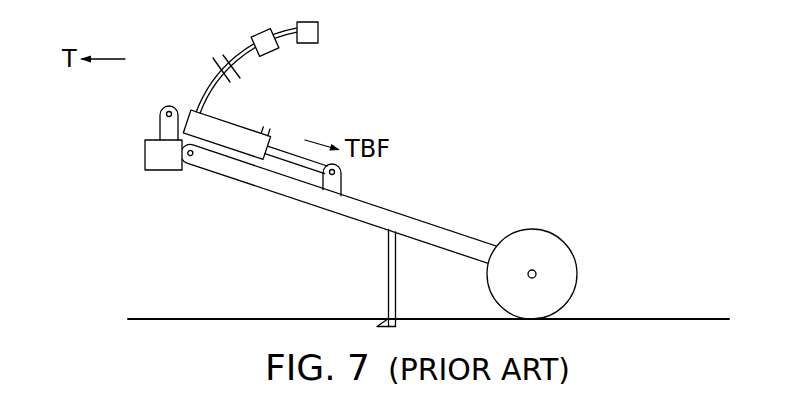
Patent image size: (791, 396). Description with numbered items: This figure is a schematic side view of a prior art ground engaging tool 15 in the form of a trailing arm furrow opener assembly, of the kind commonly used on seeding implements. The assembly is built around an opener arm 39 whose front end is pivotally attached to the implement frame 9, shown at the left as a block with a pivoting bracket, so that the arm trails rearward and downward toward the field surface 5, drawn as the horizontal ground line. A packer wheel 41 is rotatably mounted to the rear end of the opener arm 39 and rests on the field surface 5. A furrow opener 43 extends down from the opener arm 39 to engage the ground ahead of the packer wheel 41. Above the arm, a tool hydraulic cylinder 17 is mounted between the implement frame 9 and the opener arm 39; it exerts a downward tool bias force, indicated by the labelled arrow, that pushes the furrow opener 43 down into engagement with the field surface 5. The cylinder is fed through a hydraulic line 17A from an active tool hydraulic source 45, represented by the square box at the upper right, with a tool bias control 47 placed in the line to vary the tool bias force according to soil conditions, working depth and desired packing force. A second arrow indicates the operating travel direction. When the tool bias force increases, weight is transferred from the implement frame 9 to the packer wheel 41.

The field surface 5 is at (667, 319).
The implement frame 9 is at (145, 160).
The ground engaging tool 15 is at (433, 101).
The tool hydraulic cylinder 17 is at (228, 151).
The hydraulic line 17A is at (198, 109).
The opener arm 39 is at (376, 207).
The packer wheel 41 is at (576, 262).
The furrow opener 43 is at (388, 307).
The active tool hydraulic source 45 is at (308, 43).
The tool bias control 47 is at (252, 34).